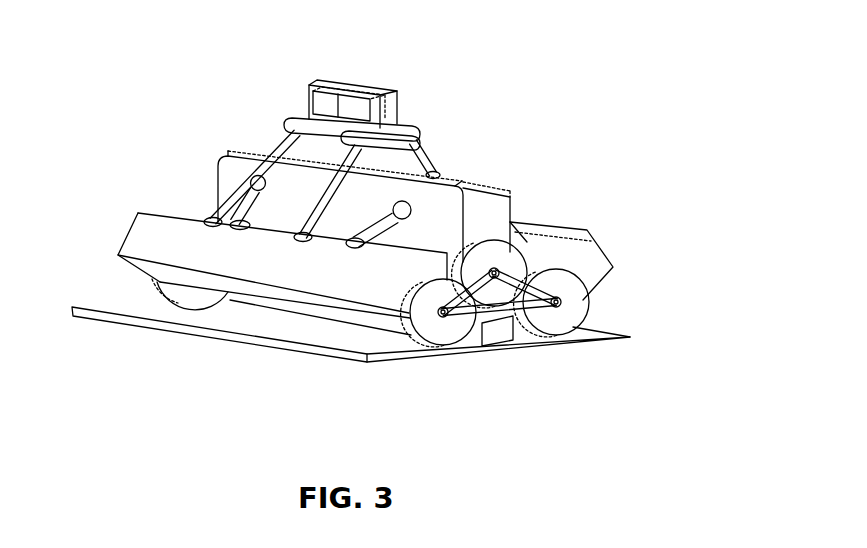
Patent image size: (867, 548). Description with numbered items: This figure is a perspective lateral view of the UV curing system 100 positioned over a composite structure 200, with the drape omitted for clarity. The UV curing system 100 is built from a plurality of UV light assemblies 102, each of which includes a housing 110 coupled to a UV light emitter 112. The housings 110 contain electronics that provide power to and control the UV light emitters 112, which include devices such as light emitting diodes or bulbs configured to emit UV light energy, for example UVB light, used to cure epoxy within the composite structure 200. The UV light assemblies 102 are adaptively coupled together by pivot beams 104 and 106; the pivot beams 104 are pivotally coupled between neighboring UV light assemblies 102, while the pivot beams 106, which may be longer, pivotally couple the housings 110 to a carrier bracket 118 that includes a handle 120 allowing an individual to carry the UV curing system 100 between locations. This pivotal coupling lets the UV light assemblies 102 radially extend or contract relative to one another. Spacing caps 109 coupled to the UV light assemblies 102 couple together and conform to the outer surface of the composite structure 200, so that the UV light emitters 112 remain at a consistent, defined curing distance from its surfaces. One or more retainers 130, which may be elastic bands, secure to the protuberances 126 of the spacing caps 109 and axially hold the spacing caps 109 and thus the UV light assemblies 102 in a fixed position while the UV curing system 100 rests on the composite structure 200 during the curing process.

The UV curing system 100 is at (489, 83).
The UV light assemblies 102 is at (460, 185).
The pivot beams 104 is at (242, 208).
The pivot beams 106 is at (290, 146).
The spacing caps 109 is at (492, 246).
The housings 110 is at (268, 153).
The UV light emitters 112 is at (345, 287).
The carrier bracket 118 is at (373, 90).
The handle 120 is at (342, 83).
The protuberances 126 is at (495, 268).
The retainers 130 is at (518, 328).
The composite structure 200 is at (617, 332).